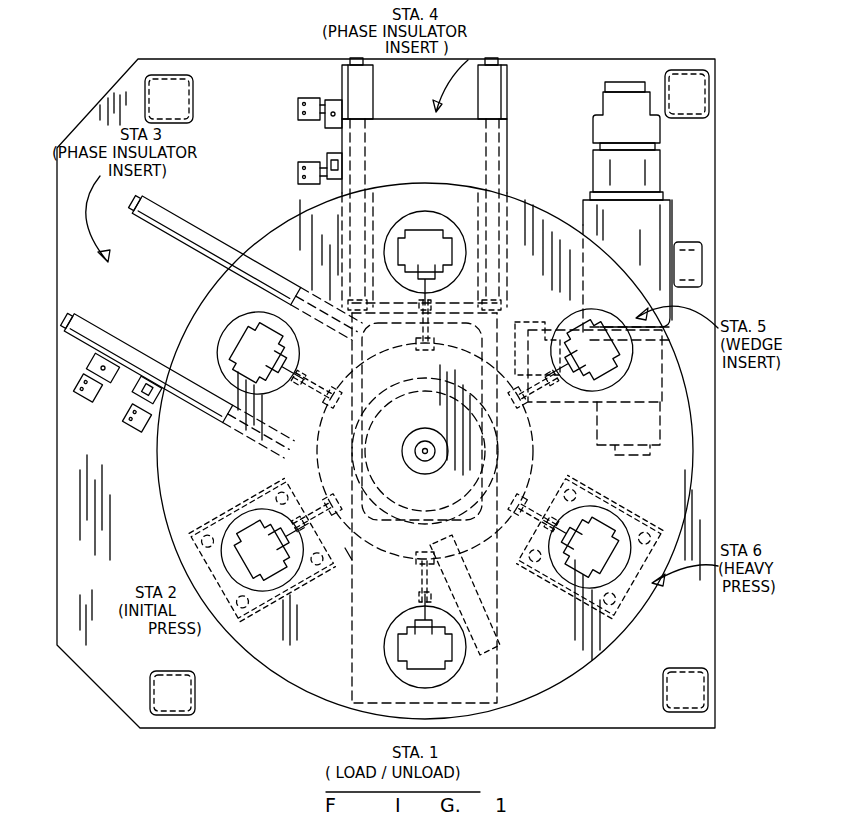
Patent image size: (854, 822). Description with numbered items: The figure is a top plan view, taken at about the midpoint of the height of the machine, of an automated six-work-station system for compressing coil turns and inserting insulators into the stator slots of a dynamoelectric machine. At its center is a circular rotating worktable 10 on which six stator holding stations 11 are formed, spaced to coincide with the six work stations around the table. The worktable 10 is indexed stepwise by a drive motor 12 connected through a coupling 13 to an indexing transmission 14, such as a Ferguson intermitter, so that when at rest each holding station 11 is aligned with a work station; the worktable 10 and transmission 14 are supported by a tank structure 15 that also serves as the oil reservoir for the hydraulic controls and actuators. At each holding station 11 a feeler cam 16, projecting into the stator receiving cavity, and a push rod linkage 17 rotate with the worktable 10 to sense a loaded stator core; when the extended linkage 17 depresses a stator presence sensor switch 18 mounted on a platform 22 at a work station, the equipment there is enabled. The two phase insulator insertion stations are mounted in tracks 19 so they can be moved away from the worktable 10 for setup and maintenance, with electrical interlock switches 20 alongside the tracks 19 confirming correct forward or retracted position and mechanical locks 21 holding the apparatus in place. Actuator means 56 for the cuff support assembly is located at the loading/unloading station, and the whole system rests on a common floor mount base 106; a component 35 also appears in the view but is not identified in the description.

The worktable 10 is at (636, 614).
The stator holding stations 11 is at (428, 230).
The drive motor 12 is at (670, 222).
The coupling 13 is at (505, 346).
The indexing transmission 14 is at (510, 318).
The tank structure 15 is at (500, 684).
The feeler cam 16 is at (272, 572).
The push rod linkage 17 is at (347, 550).
The stator presence sensor switch 18 is at (318, 486).
The tracks 19 is at (360, 90).
The electrical interlock switches 20 is at (298, 104).
The mechanical locks 21 is at (335, 100).
The platform 22 is at (540, 448).
The mounting post 35 is at (170, 75).
The actuator means 56 is at (500, 580).
The floor mount base 106 is at (98, 685).